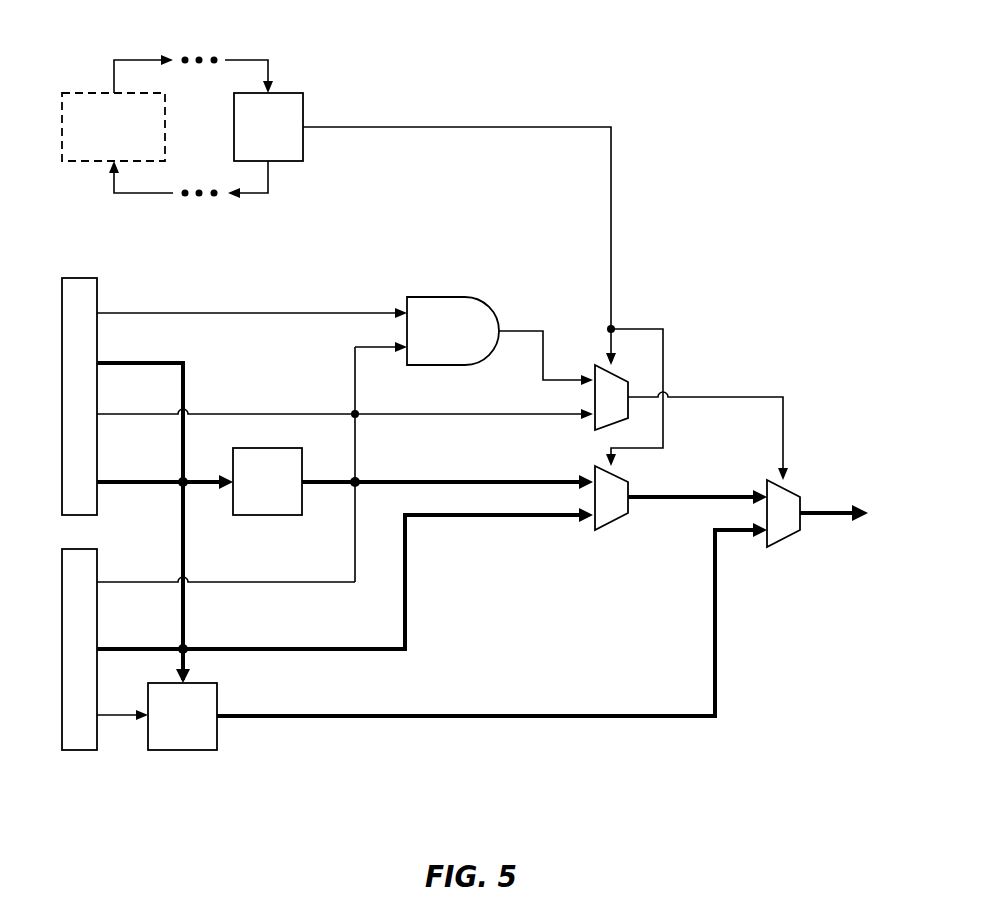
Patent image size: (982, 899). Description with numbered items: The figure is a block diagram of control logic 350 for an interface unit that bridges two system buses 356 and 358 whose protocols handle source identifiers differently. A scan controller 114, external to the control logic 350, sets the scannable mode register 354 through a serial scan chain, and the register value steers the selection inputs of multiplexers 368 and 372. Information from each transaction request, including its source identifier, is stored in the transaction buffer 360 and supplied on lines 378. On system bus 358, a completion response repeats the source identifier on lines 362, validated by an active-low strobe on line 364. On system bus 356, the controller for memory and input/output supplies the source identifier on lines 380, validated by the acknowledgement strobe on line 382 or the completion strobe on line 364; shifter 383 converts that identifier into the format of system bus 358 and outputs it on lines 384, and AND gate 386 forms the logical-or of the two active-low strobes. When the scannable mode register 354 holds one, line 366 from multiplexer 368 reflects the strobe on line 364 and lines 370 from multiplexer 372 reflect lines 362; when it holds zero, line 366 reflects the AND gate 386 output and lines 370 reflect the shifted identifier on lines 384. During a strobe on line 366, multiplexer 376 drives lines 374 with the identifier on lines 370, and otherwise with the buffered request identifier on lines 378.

The control logic 350 is at (736, 52).
The scan controller 114 is at (73, 92).
The scannable mode register 354 is at (288, 92).
The system bus 356 is at (83, 277).
The system bus 358 is at (87, 752).
The transaction buffer 360 is at (168, 752).
The lines 362 is at (117, 647).
The line 364 is at (375, 412).
The line 366 is at (702, 395).
The multiplexer 368 is at (593, 370).
The lines 370 is at (702, 495).
The multiplexer 372 is at (612, 526).
The lines 374 is at (822, 510).
The multiplexer 376 is at (783, 544).
The lines 378 is at (375, 713).
The lines 380 is at (117, 480).
The line 382 is at (117, 311).
The shifter 383 is at (253, 516).
The lines 384 is at (375, 478).
The AND gate 386 is at (435, 297).